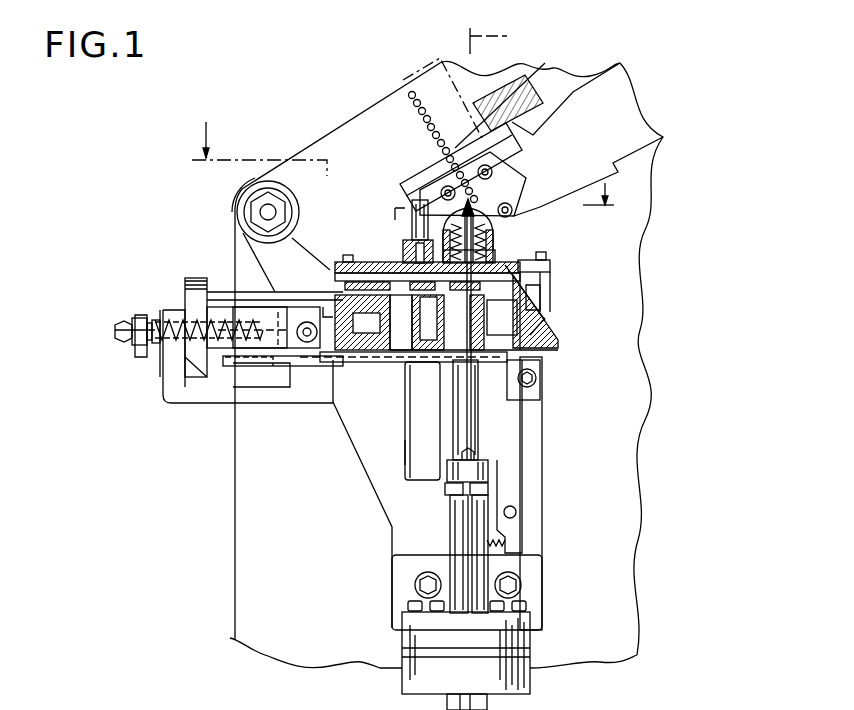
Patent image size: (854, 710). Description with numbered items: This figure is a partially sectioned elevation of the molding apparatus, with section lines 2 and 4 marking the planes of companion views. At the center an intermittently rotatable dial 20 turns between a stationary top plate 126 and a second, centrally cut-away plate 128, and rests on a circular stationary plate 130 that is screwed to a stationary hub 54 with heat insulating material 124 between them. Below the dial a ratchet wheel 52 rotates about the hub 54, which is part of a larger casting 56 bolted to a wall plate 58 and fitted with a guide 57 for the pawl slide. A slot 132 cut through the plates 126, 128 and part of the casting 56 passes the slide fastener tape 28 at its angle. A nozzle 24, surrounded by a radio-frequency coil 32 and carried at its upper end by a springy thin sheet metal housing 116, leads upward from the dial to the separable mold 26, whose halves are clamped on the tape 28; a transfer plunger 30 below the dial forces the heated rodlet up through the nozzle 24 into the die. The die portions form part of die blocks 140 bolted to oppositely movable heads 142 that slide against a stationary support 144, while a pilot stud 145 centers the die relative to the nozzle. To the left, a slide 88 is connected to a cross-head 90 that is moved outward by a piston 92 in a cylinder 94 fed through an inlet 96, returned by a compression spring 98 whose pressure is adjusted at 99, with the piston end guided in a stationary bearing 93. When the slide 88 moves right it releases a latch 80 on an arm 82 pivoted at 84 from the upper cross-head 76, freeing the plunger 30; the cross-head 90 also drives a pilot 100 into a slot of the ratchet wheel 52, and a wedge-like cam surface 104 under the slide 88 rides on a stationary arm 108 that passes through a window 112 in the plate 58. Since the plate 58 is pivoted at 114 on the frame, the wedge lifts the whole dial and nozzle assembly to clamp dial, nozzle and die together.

The section line 2- 2 is at (403, 150).
The section line 4- 4 is at (498, 41).
The intermittently rotatable dial 20 is at (550, 259).
The nozzle 24 is at (492, 228).
The mold (die) 26 is at (474, 172).
The slide fastener tape 28 is at (437, 72).
The transfer plunger 30 is at (468, 408).
The radio-frequency coil 32 is at (500, 250).
The ratchet wheel 52 is at (538, 342).
The stationary hub 54 is at (438, 322).
The casting 56 is at (533, 343).
The guide 57 is at (345, 348).
The wall (plate) 58 is at (353, 437).
The upper cross-head 76 is at (453, 470).
The latch 80 is at (484, 457).
The arm 82 is at (517, 460).
The pivot 84 is at (517, 512).
The slide 88 is at (318, 362).
The cross-head 90 is at (188, 308).
The piston 92 is at (268, 313).
The stationary bearing 93 is at (167, 383).
The cylinder 94 is at (288, 313).
The inlet 96 is at (307, 323).
The compression spring 98 is at (223, 317).
The spring adjustment 99 is at (120, 341).
The pilot 100 is at (352, 297).
The wedge-like cam surface 104 is at (395, 357).
The stationary arm (bracket) 108 is at (417, 393).
The window 112 is at (408, 451).
The pivot 114 is at (310, 351).
The thin sheet metal housing 116 is at (458, 222).
The heat insulating material 124 is at (562, 297).
The stationary top plate 126 is at (552, 272).
The plate 128 is at (563, 275).
The circular stationary plate 130 is at (552, 332).
The slot 132 is at (534, 298).
The die blocks 140 is at (525, 193).
The oppositely movable heads 142 is at (624, 82).
The stationary support 144 is at (526, 98).
The pilot stud 145 is at (417, 207).